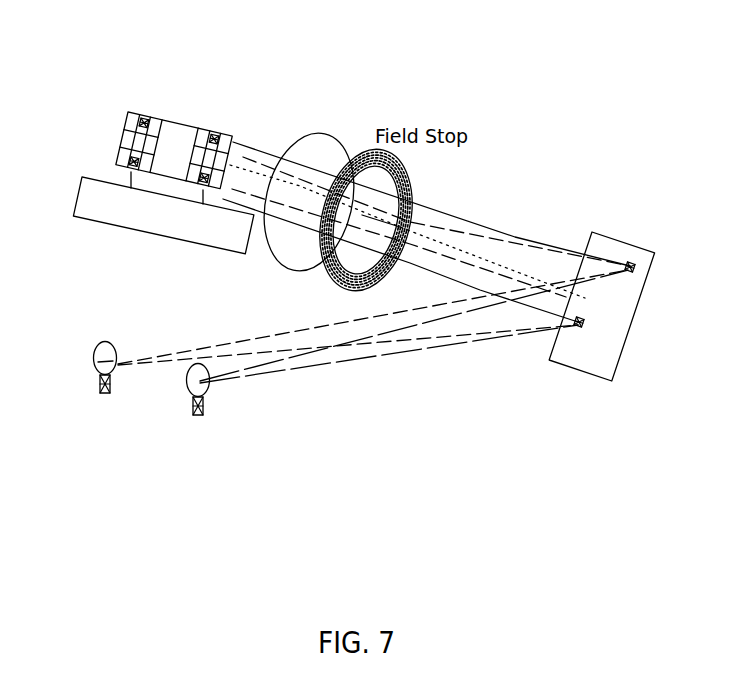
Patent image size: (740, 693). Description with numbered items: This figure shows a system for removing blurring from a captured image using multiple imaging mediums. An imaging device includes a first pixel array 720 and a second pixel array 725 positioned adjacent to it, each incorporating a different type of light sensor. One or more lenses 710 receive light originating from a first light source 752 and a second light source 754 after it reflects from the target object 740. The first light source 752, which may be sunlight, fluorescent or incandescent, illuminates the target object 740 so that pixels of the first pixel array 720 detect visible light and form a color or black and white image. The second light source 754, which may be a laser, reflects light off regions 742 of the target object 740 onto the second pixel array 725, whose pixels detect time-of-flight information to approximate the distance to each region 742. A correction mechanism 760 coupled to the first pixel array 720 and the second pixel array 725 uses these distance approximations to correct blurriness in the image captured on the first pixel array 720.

The lens 710 is at (334, 132).
The first pixel array 720 is at (222, 132).
The second pixel array 725 is at (145, 117).
The target object 740 is at (627, 346).
The regions of the target object 742 is at (634, 266).
The first light source 752 is at (113, 374).
The second light source 754 is at (192, 413).
The correction mechanism 760 is at (73, 216).